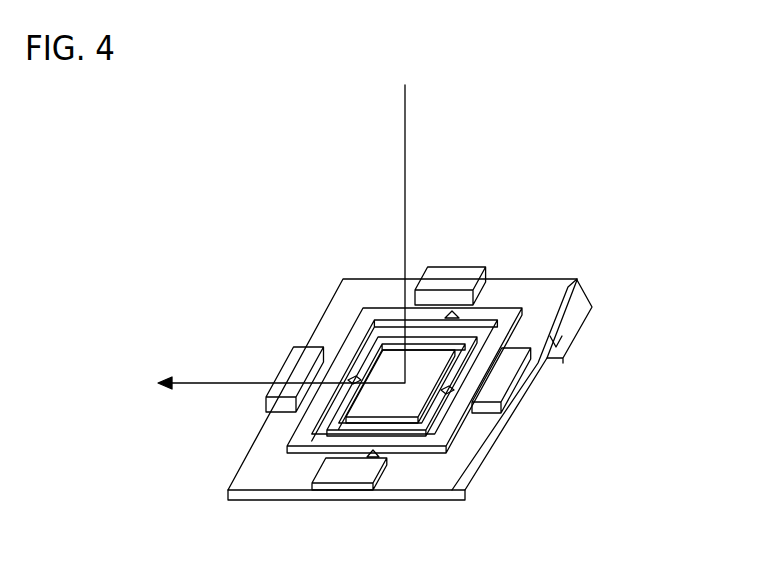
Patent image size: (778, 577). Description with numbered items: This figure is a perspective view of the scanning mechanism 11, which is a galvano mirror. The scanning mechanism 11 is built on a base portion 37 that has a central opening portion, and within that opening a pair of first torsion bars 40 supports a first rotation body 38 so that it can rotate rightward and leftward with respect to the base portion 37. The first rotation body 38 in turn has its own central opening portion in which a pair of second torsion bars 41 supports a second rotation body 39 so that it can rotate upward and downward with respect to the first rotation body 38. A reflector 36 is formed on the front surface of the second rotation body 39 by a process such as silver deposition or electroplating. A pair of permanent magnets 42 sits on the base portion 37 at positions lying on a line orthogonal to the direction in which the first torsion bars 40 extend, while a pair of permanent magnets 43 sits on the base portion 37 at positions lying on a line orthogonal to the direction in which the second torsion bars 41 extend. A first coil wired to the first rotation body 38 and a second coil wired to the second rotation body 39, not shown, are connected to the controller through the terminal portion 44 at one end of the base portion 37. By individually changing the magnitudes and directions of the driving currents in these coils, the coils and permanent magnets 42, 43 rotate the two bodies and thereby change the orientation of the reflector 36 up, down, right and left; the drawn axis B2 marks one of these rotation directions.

The scanning mechanism 11 is at (577, 277).
The reflector 36 is at (440, 398).
The base portion 37 is at (246, 494).
The first rotation body 38 is at (510, 342).
The second rotation body 39 is at (400, 403).
The first torsion bars 40 is at (460, 318).
The second torsion bars 41 is at (354, 378).
The permanent magnets 42 is at (290, 372).
The permanent magnets 43 is at (452, 277).
The terminal portion 44 is at (583, 311).
The rotation axis B2 is at (208, 382).